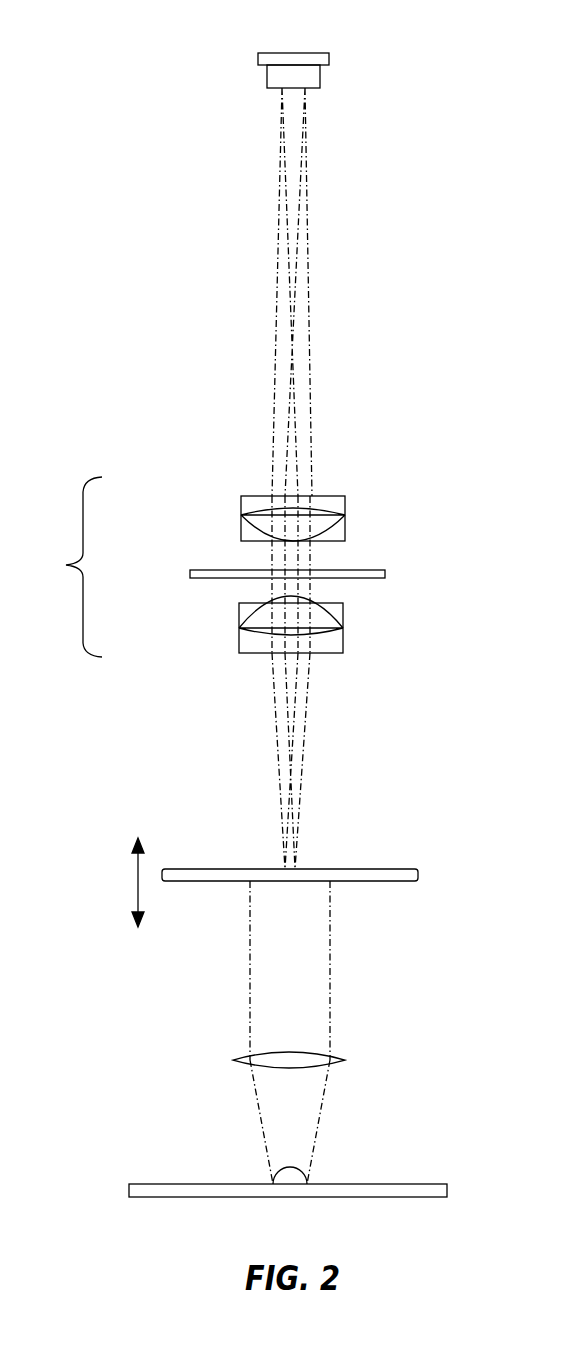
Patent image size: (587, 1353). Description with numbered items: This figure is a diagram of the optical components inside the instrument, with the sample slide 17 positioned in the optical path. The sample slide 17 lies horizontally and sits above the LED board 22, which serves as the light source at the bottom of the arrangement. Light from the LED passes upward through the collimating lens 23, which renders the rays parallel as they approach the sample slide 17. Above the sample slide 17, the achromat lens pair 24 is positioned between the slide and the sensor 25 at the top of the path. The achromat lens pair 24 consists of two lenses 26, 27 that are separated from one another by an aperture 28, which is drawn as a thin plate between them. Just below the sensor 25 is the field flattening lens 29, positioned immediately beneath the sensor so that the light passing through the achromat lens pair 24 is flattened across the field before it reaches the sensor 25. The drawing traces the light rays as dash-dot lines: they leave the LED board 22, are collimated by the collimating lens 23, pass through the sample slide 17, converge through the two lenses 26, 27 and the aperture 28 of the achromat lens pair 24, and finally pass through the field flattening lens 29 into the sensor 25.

The sensor 25 is at (322, 56).
The field flattening lens 29 is at (320, 78).
The achromat lens pair 24 is at (66, 567).
The lens 26 is at (241, 513).
The aperture 28 is at (366, 570).
The lens 27 is at (239, 642).
The sample slide 17 is at (395, 869).
The collimating lens 23 is at (338, 1057).
The LED board 22 is at (418, 1184).